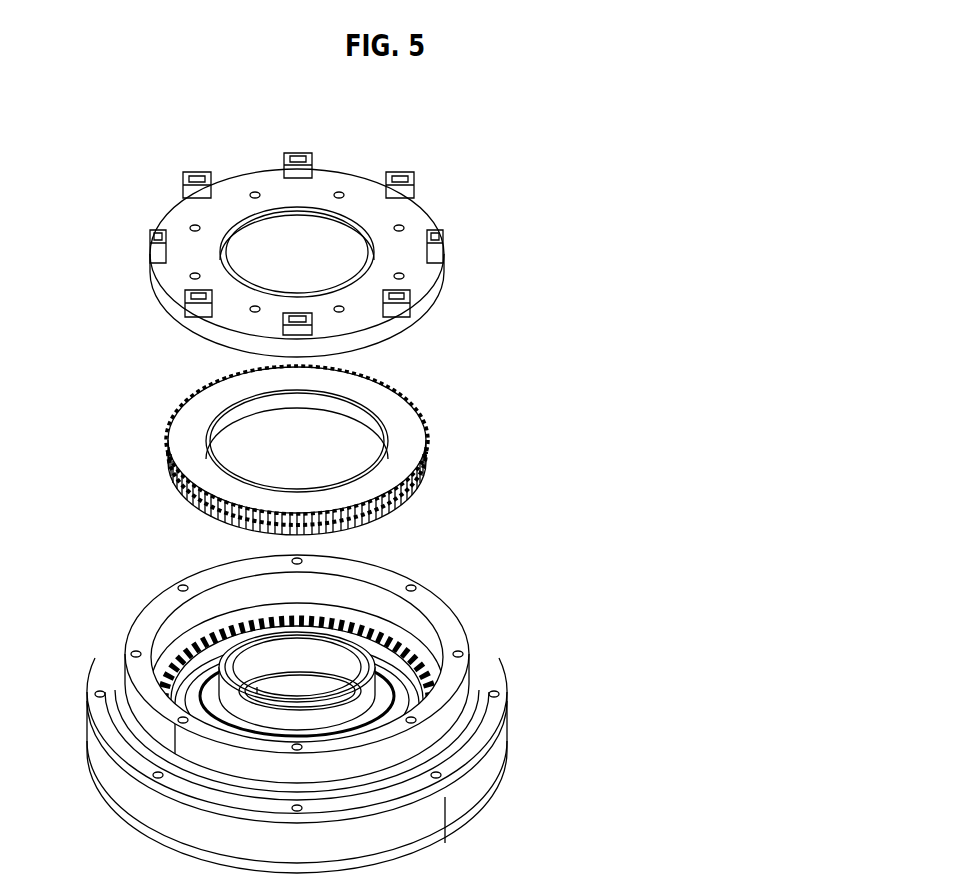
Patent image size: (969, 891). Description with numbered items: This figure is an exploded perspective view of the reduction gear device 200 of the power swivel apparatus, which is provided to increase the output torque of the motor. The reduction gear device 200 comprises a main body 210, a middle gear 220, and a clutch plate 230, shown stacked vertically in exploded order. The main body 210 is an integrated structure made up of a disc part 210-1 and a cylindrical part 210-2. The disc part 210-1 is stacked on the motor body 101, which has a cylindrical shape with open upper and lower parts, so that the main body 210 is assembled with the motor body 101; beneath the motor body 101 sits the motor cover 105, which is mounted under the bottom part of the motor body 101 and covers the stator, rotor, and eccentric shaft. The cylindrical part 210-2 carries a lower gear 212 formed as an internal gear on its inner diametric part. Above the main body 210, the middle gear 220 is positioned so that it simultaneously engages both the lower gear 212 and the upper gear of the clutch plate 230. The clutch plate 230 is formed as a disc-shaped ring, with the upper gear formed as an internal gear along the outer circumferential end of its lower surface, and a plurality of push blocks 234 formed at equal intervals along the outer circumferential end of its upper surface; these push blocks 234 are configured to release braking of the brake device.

The reduction gear device 200 is at (484, 339).
The clutch plate 230 is at (178, 320).
The push blocks 234 is at (406, 197).
The middle gear 220 is at (434, 449).
The main body 210 is at (658, 660).
The disc part 210-1 is at (487, 735).
The cylindrical part 210-2 is at (465, 690).
The lower gear 212 is at (397, 647).
The motor body 101 is at (491, 770).
The motor cover 105 is at (479, 812).